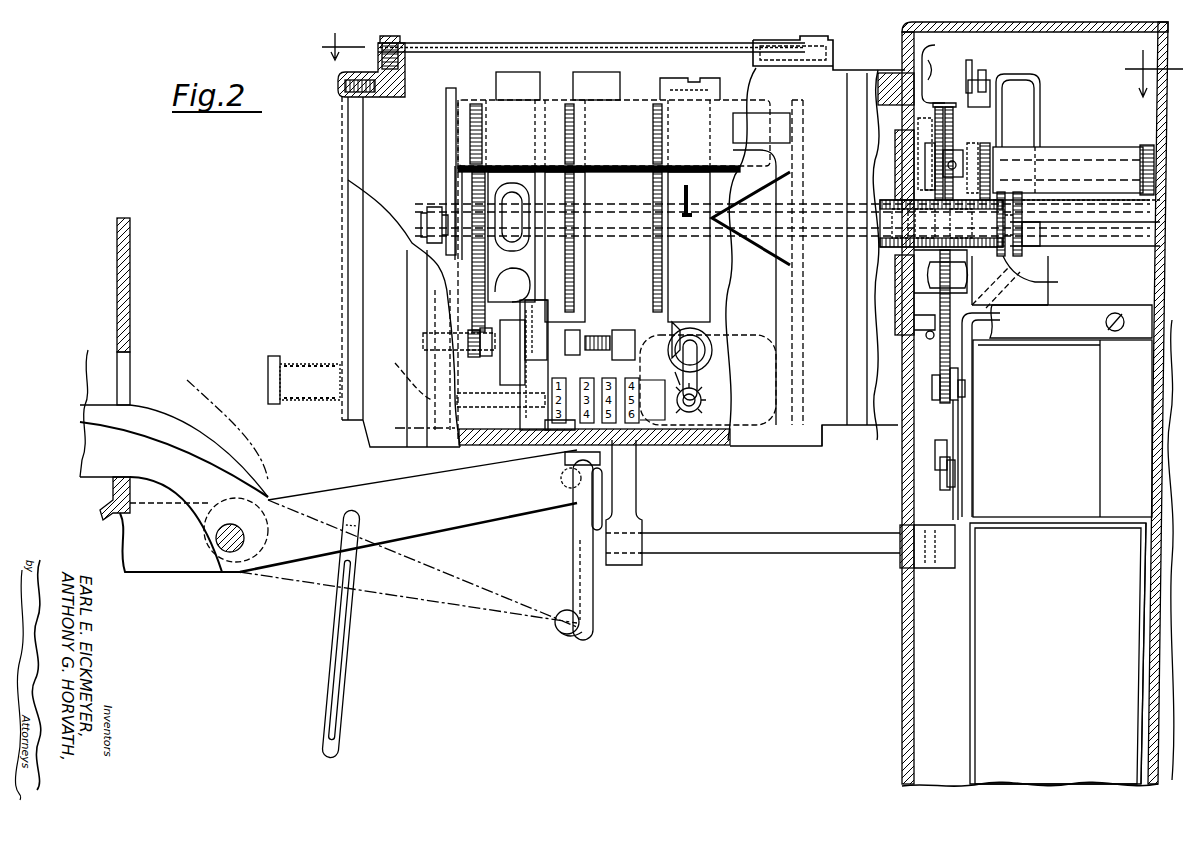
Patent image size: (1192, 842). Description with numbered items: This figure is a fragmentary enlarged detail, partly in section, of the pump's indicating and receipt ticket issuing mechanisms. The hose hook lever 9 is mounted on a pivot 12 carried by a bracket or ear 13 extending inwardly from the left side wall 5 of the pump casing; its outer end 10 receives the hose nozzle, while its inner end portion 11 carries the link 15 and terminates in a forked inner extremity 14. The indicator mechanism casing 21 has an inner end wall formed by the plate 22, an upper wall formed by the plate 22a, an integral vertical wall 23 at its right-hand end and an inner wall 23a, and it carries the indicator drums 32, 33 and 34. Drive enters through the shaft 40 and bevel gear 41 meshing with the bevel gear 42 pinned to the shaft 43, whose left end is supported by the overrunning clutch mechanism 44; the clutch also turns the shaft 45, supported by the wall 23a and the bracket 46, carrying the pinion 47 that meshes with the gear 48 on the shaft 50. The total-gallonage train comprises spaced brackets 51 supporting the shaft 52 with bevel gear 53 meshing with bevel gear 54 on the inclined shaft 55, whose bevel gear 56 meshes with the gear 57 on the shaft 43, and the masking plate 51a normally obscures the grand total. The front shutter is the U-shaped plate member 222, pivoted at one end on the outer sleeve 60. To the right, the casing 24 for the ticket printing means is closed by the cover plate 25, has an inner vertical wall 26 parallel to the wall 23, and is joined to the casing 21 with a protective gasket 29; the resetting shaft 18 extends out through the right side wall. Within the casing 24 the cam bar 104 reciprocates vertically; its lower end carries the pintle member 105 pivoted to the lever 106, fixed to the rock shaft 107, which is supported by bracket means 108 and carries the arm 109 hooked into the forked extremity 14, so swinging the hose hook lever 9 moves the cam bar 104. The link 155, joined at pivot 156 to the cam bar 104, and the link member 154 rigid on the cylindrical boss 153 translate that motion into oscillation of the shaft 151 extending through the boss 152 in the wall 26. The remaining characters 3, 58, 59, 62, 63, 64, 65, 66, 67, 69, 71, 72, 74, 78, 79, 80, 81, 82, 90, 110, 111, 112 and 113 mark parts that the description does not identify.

The section line 3- 3 is at (747, 72).
The left side wall 5 is at (131, 268).
The hose hook lever 9 is at (318, 492).
The outer end 10 is at (80, 445).
The inner end portion 11 is at (442, 502).
The pivot 12 is at (245, 538).
The bracket or ear 13 is at (166, 548).
The forked inner extremity 14 is at (562, 482).
The link 15 is at (930, 152).
The resetting shaft 18 is at (1118, 228).
The indicator mechanism casing 21 is at (708, 448).
The plate 22 is at (345, 148).
The plate 22a is at (596, 44).
The vertical wall 23 is at (830, 100).
The wall 23a is at (446, 170).
The casing 24 is at (902, 600).
The cover plate 25 is at (1146, 598).
The inner vertical wall 26 is at (886, 428).
The protective gasket 29 is at (847, 350).
The indicator drums 32 is at (692, 80).
The indicator drums 33 is at (608, 82).
The indicator drums 34 is at (532, 82).
The shaft 40 is at (604, 460).
The bevel gear 41 is at (602, 334).
The bevel gear 42 is at (628, 332).
The shaft 43 is at (580, 330).
The overrunning clutch mechanism 44 is at (538, 300).
The shaft 45 is at (490, 350).
The bracket 46 is at (505, 380).
The pinion 47 is at (470, 330).
The gear 48 is at (478, 300).
The shaft 50 is at (425, 214).
The spaced brackets 51 is at (912, 192).
The masking plate 51a is at (501, 399).
The shaft 52 is at (548, 444).
The bevel gear 53 is at (698, 410).
The bevel gear 54 is at (699, 382).
The inclined shaft 55 is at (700, 375).
The bevel gear 56 is at (712, 356).
The gear 57 is at (700, 320).
The numeral wheel 58 is at (548, 204).
The numeral wheel 59 is at (632, 203).
The outer sleeve 60 is at (716, 198).
The link 62 is at (1006, 268).
The lever 63 is at (1045, 272).
The collar 64 is at (1024, 242).
The shaft 65 is at (1068, 165).
The knob 66 is at (1120, 150).
The gear 67 is at (983, 143).
The spring 69 is at (923, 60).
The shaft 71 is at (1075, 200).
The sleeve 72 is at (976, 204).
The clutch 74 is at (955, 147).
The gear 78 is at (952, 103).
The gear 79 is at (940, 103).
The bearing 80 is at (930, 115).
The bushing 81 is at (930, 229).
The bracket 82 is at (930, 290).
The cover 90 is at (1036, 524).
The cam bar 104 is at (1040, 84).
The pintle member 105 is at (940, 445).
The lever 106 is at (955, 500).
The rock shaft 107 is at (876, 545).
The bracket means 108 is at (628, 512).
The arm 109 is at (572, 510).
The loop 110 is at (998, 78).
The pin 111 is at (968, 62).
The pin 112 is at (982, 70).
The block 113 is at (990, 96).
The shaft 151 is at (910, 340).
The boss 152 is at (926, 387).
The cylindrical boss 153 is at (935, 326).
The link member 154 is at (955, 353).
The link 155 is at (958, 372).
The pivot 156 is at (966, 388).
The U-shaped plate member 222 is at (524, 130).